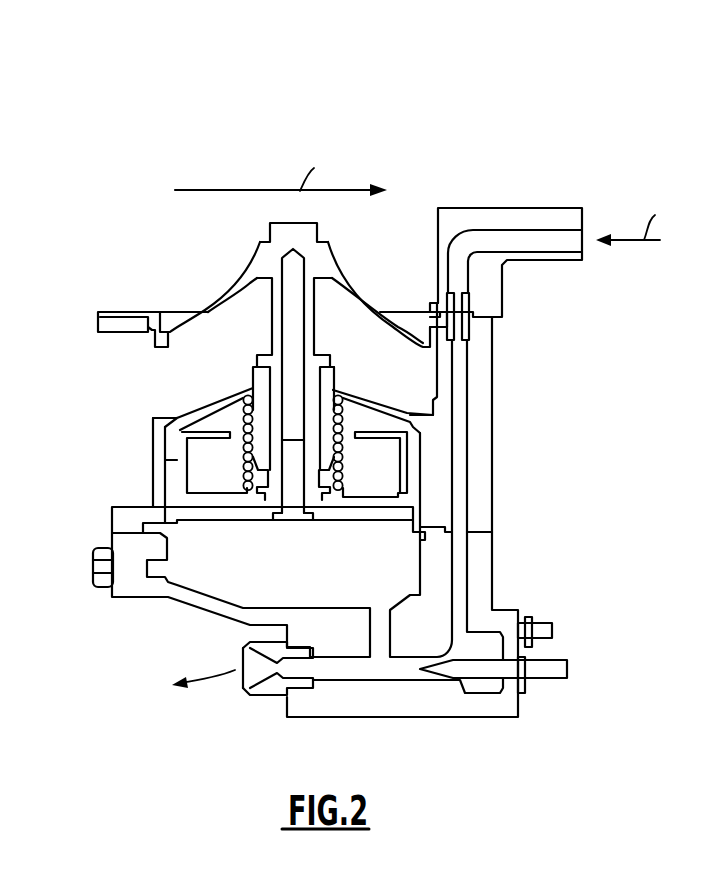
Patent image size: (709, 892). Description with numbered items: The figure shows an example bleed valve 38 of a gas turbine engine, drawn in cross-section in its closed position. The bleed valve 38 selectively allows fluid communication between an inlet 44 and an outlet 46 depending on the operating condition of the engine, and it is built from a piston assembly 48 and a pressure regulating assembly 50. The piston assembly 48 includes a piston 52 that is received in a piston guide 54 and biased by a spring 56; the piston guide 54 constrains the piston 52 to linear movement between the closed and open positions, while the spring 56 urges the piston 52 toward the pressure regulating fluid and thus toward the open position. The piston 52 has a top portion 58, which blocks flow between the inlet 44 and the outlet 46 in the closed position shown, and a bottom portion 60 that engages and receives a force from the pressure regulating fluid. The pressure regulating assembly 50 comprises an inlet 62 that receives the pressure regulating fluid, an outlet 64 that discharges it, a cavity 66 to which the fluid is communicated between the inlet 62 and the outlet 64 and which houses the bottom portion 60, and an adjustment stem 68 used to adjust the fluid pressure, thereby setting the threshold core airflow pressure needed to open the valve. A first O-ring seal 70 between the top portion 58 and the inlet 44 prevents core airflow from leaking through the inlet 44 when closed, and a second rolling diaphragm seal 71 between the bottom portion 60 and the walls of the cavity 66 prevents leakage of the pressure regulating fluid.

The bleed valve 38 is at (96, 101).
The inlet 44 is at (180, 282).
The outlet 46 is at (125, 406).
The piston assembly 48 is at (349, 260).
The pressure regulating assembly 50 is at (172, 614).
The piston 52 is at (315, 323).
The piston guide 54 is at (325, 391).
The spring 56 is at (346, 457).
The top portion 58 is at (255, 258).
The bottom portion 60 is at (352, 512).
The inlet 62 is at (592, 220).
The outlet 64 is at (236, 694).
The cavity 66 is at (310, 580).
The adjustment stem 68 is at (568, 667).
The first O-ring seal 70 is at (430, 323).
The second rolling diaphragm seal 71 is at (433, 523).